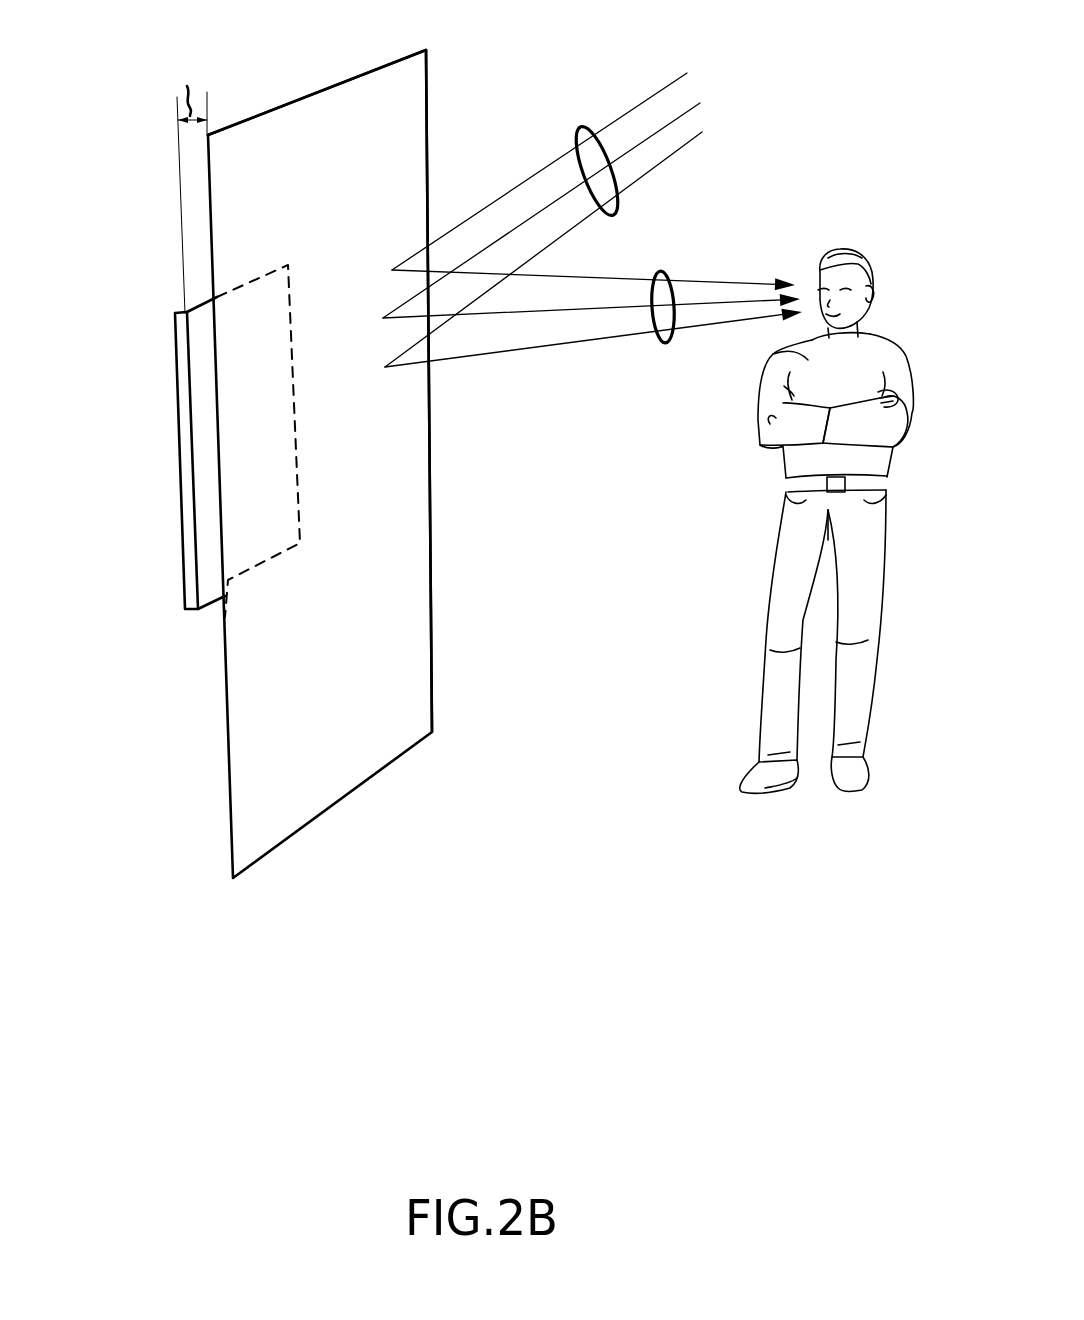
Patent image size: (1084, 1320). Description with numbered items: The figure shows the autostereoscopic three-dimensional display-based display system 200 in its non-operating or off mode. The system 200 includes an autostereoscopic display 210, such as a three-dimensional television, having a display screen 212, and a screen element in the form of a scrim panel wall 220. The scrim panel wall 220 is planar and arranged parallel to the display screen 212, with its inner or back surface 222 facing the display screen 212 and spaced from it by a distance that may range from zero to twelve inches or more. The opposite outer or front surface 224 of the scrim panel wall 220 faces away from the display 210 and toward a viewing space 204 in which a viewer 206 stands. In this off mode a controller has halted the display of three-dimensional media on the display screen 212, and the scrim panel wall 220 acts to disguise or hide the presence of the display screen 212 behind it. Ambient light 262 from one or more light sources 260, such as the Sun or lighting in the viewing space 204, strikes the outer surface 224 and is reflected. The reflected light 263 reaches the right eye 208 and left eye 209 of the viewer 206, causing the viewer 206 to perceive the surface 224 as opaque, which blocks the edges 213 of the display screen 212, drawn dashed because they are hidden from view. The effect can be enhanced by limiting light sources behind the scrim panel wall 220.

The autostereoscopic 3D display-based display system 200 is at (498, 34).
The viewing space 204 is at (604, 918).
The viewer 206 is at (843, 772).
The right eye 208 is at (822, 290).
The left eye 209 is at (845, 290).
The autostereoscopic display 210 is at (188, 662).
The display screen 212 is at (203, 338).
The edges 213 is at (223, 620).
The scrim panel wall 220 is at (300, 862).
The inner surface 222 is at (314, 90).
The outer surface 224 is at (418, 106).
The light sources 260 is at (625, 211).
The ambient light 262 is at (614, 200).
The reflected light 263 is at (663, 343).